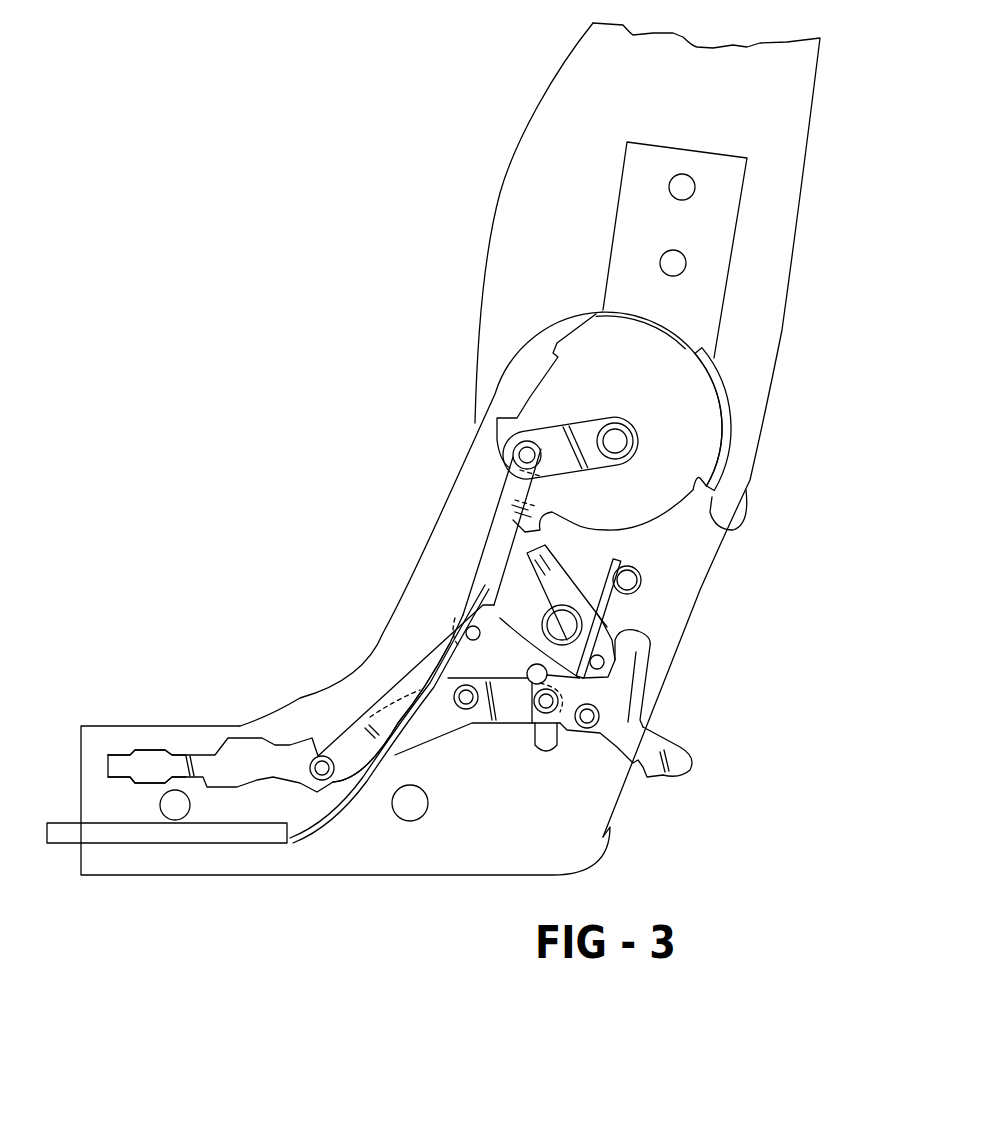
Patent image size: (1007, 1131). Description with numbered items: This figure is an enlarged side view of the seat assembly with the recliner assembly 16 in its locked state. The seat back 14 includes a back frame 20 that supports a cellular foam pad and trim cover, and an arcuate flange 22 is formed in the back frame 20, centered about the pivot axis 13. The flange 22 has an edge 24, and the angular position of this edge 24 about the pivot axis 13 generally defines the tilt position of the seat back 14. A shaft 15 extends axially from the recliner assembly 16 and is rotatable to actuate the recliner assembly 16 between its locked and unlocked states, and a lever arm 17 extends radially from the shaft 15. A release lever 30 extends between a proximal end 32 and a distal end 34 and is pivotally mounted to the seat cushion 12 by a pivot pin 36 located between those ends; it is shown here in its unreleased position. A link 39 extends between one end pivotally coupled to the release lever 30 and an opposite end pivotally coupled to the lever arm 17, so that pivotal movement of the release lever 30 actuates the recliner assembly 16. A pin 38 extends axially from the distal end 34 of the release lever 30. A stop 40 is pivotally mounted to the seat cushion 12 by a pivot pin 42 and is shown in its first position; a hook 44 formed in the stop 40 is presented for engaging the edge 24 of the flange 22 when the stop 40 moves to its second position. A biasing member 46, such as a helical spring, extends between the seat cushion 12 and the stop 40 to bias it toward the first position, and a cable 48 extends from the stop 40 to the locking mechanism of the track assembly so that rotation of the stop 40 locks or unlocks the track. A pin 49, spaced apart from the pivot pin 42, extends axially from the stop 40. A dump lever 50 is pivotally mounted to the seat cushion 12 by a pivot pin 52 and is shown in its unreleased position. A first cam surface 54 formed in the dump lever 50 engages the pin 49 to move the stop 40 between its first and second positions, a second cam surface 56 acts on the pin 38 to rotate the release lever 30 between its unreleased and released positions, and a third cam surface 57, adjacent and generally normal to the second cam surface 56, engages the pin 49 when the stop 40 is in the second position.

The seat cushion 12 is at (213, 877).
The pivot axis 13 is at (732, 433).
The seat back 14 is at (535, 110).
The shaft 15 is at (623, 443).
The recliner assembly 16 is at (712, 498).
The lever arm 17 is at (578, 428).
The back frame 20 is at (735, 283).
The arcuate flange 22 is at (541, 378).
The edge 24 is at (517, 560).
The release lever 30 is at (323, 737).
The proximal end 32 is at (150, 755).
The distal end 34 is at (545, 752).
The pivot pin 36 is at (461, 712).
The pin 38 is at (530, 718).
The link 39 is at (393, 692).
The stop 40 is at (607, 620).
The pivot pin 42 is at (587, 604).
The hook 44 is at (528, 568).
The biasing member 46 is at (615, 595).
The cable 48 is at (337, 815).
The pin 49 is at (626, 701).
The dump lever 50 is at (693, 765).
The pivot pin 52 is at (598, 728).
The first cam surface 54 is at (610, 632).
The second cam surface 56 is at (527, 677).
The third cam surface 57 is at (466, 628).